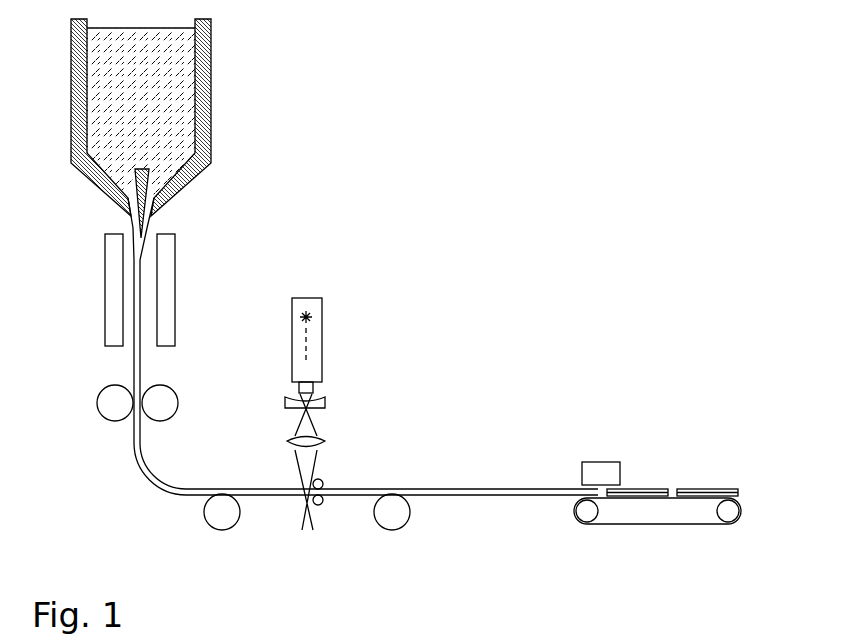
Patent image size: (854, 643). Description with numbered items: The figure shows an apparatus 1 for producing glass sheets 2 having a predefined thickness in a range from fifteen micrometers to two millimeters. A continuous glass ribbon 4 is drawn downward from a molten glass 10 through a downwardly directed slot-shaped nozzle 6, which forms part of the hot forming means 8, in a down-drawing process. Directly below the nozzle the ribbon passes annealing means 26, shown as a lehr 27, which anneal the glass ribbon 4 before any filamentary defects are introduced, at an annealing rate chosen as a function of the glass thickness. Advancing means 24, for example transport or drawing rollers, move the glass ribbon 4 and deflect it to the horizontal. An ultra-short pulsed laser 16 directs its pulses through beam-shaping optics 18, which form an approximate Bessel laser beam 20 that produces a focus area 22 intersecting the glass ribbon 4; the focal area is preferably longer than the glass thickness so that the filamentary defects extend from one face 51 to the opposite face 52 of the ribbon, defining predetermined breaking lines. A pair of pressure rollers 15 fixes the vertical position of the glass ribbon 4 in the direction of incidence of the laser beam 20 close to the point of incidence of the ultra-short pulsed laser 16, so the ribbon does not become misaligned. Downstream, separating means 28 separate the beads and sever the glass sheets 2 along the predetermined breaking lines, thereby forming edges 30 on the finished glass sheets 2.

The apparatus 1 is at (522, 183).
The glass sheets 2 is at (652, 488).
The glass ribbon 4 is at (141, 368).
The slot-shaped nozzle 6 is at (160, 215).
The hot forming means 8 is at (210, 108).
The molten glass 10 is at (175, 72).
The pressure rollers 15 is at (325, 482).
The ultra-short pulsed laser 16 is at (322, 340).
The beam-shaping optics 18 is at (325, 408).
The laser beam 20 is at (318, 467).
The focus area 22 is at (305, 490).
The advancing means 24 is at (217, 508).
The annealing means 26 is at (176, 268).
The lehr 27 is at (166, 290).
The separating means 28 is at (617, 462).
The edges 30 is at (627, 498).
The face 51 is at (505, 488).
The opposite face 52 is at (495, 498).